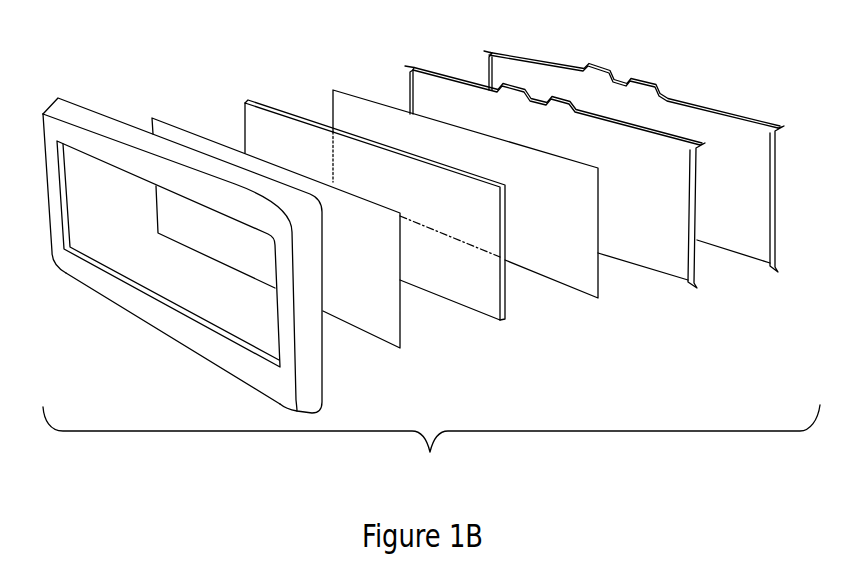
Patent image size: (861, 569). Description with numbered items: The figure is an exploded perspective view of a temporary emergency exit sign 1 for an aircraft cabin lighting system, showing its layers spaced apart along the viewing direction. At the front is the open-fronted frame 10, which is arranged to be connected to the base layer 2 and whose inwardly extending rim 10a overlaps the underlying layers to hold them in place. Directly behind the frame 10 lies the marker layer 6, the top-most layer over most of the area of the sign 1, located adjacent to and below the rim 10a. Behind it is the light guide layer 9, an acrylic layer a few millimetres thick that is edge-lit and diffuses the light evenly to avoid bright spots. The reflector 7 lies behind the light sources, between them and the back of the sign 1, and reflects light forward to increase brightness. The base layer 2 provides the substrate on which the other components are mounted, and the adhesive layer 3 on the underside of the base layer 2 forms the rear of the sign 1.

The temporary emergency exit sign 1 is at (431, 442).
The base layer 2 is at (668, 253).
The adhesive layer 3 is at (507, 72).
The marker layer 6 is at (373, 300).
The reflector 7 is at (570, 263).
The light guide layer 9 is at (470, 278).
The frame 10 is at (88, 290).
The rim 10a is at (187, 317).